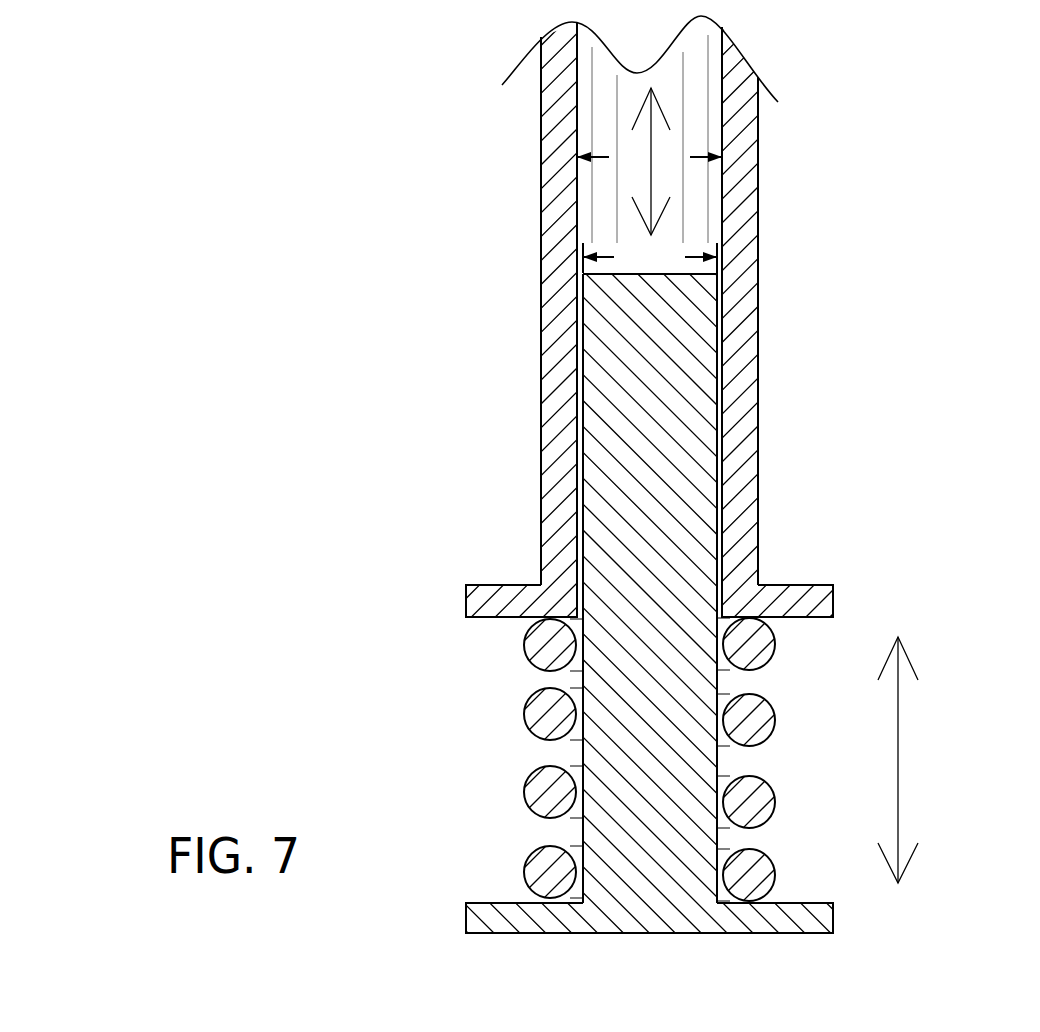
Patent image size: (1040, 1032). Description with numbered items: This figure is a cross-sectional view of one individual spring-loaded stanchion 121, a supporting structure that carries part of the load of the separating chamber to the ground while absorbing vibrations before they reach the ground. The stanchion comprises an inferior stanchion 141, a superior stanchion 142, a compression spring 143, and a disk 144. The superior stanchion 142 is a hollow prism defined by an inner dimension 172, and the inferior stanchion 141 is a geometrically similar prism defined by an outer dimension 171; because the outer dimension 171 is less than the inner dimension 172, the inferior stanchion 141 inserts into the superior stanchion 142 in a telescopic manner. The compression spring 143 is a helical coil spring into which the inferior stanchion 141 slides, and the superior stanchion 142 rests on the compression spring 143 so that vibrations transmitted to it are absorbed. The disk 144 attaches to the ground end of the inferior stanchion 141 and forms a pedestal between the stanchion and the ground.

The individual spring-loaded stanchion 121 is at (213, 235).
The inferior stanchion 141 is at (690, 433).
The superior stanchion 142 is at (737, 330).
The compression spring 143 is at (770, 708).
The disk 144 is at (818, 917).
The outer dimension 171 is at (650, 258).
The inner dimension 172 is at (649, 161).